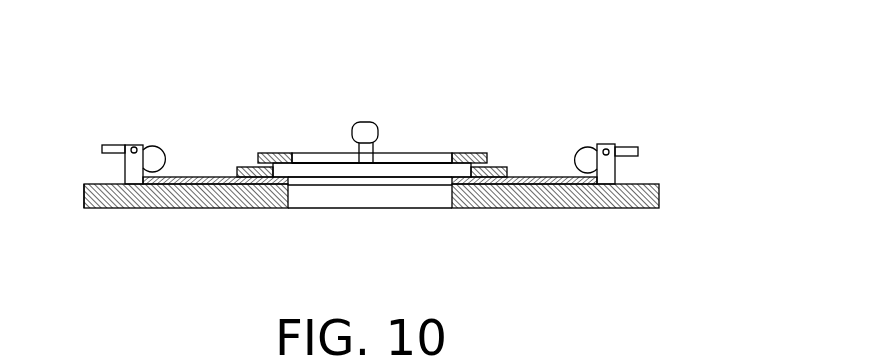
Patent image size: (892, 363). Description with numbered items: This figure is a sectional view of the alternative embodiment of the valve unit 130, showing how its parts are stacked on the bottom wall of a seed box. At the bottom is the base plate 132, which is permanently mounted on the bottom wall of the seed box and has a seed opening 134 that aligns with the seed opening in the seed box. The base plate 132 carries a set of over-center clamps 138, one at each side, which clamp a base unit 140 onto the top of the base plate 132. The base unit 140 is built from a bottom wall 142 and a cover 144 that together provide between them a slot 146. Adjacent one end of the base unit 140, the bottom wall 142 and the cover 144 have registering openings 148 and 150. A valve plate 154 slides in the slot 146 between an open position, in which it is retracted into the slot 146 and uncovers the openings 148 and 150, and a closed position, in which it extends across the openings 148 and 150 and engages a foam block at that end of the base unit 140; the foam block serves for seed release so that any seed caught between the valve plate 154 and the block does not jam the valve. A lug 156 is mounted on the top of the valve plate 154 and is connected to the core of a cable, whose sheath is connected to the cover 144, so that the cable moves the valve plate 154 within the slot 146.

The valve unit 130 is at (700, 206).
The base plate 132 is at (625, 197).
The seed opening 134 is at (450, 198).
The over-center clamps 138 is at (150, 152).
The base unit 140 is at (268, 145).
The bottom wall 142 is at (212, 179).
The cover 144 is at (288, 152).
The slot 146 is at (435, 165).
The opening 148 is at (322, 153).
The opening 150 is at (433, 170).
The valve plate 154 is at (340, 167).
The lug 156 is at (382, 143).